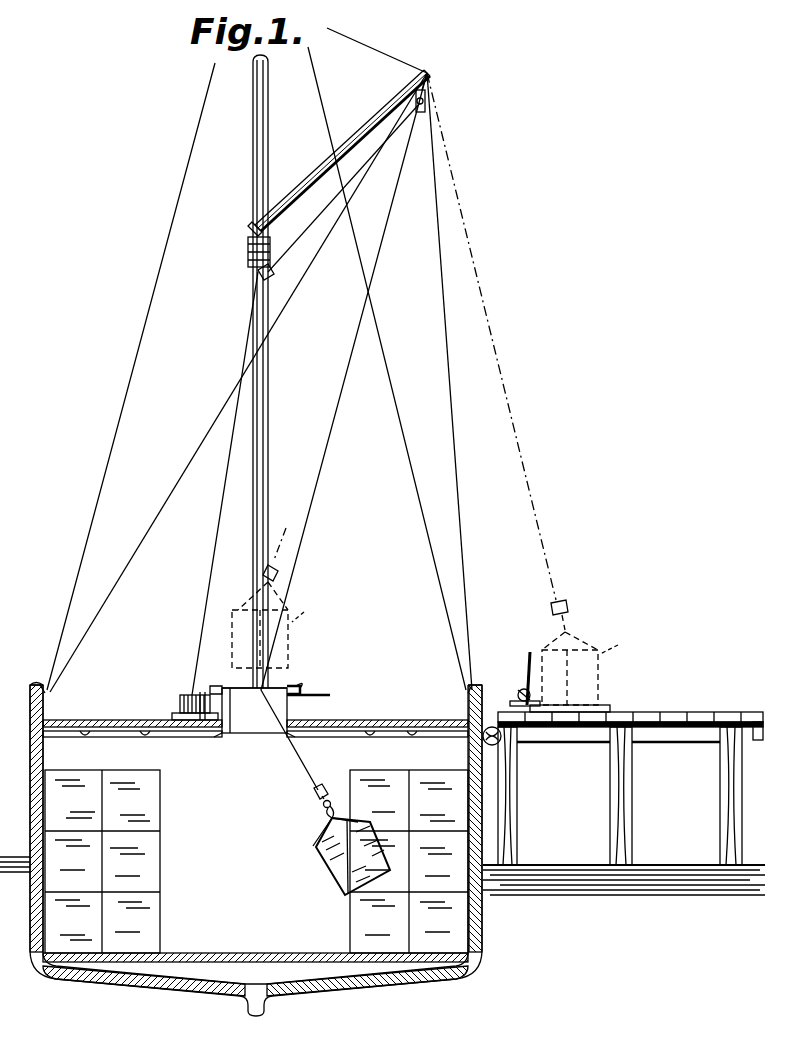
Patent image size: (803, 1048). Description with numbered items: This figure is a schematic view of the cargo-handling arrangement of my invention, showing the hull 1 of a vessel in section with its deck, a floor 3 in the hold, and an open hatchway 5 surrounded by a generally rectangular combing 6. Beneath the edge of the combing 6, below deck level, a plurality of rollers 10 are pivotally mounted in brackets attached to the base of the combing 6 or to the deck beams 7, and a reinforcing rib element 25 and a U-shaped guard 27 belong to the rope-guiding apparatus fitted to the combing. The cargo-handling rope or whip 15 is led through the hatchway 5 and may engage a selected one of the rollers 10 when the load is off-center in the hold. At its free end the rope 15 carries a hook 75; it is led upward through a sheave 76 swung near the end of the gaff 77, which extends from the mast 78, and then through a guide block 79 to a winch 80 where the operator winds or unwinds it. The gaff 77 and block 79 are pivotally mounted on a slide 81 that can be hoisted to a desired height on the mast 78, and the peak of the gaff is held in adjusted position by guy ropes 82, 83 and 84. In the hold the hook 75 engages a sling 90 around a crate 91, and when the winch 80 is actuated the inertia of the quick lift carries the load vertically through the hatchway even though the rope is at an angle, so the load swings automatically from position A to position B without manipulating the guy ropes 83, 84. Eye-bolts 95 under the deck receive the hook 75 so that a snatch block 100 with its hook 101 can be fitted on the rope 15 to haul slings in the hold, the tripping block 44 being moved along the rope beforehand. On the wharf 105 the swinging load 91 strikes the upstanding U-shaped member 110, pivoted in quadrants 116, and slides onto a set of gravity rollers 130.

The hull 1 is at (485, 918).
The floor 3 is at (216, 955).
The hatchway 5 is at (233, 742).
The combing 6 is at (224, 704).
The deck beams 7 is at (333, 738).
The rollers 10 is at (213, 738).
The hoisting rope 15 is at (214, 536).
The reinforcing rib element 25 is at (293, 687).
The U-shaped guard 27 is at (195, 690).
The tripping block 44 is at (314, 794).
The hook 75 is at (340, 814).
The sheave 76 is at (428, 101).
The gaff 77 is at (377, 112).
The mast 78 is at (270, 392).
The guide block 79 is at (272, 275).
The winch 80 is at (180, 698).
The slide 81 is at (249, 256).
The guy rope 82 is at (381, 53).
The guy rope 83 is at (153, 520).
The guy rope 84 is at (448, 416).
The sling 90 is at (316, 846).
The crate 91 is at (290, 643).
The eye-bolts 95 is at (145, 737).
The snatch block 100 is at (331, 802).
The hook 101 is at (326, 811).
The wharf 105 is at (670, 718).
The U-shaped member 110 is at (528, 662).
The quadrants 116 is at (520, 691).
The gravity rollers 130 is at (608, 709).